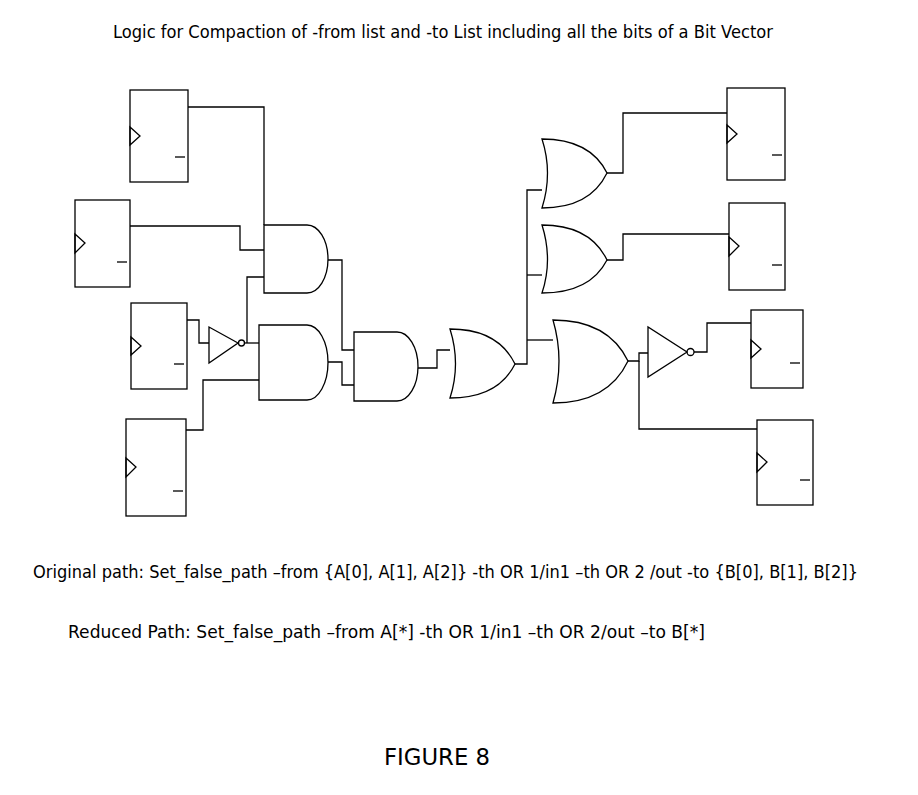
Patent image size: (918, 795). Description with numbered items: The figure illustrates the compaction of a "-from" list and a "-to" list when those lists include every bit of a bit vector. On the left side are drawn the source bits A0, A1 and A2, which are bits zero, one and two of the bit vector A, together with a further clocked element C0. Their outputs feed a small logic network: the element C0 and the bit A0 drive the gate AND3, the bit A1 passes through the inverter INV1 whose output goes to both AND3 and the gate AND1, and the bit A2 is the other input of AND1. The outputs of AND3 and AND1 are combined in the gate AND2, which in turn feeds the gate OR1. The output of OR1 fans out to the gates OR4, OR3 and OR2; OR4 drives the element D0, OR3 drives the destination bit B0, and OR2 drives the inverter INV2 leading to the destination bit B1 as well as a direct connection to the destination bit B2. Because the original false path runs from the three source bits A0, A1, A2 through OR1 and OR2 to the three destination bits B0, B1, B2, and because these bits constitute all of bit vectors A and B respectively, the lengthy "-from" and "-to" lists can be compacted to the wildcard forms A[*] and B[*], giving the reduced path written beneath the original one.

The flip-flop C0 is at (159, 144).
The bit zero of bit vector A A0 is at (102, 260).
The bit one of bit vector A A1 is at (159, 359).
The bit two of bit vector A A2 is at (156, 480).
The flip-flop D0 is at (756, 144).
The bit zero of bit vector B B0 is at (757, 254).
The bit one of bit vector B B1 is at (777, 359).
The bit two of bit vector B B2 is at (785, 474).
The AND gate 1 AND1 is at (293, 362).
The AND gate 2 AND2 is at (386, 366).
The AND gate 3 AND3 is at (296, 259).
The OR gate 1 OR1 is at (482, 363).
The OR gate 2 OR2 is at (590, 361).
The OR gate 3 OR3 is at (574, 259).
The OR gate 4 OR4 is at (574, 173).
The inverter 1 INV1 is at (227, 353).
The inverter 2 INV2 is at (671, 361).